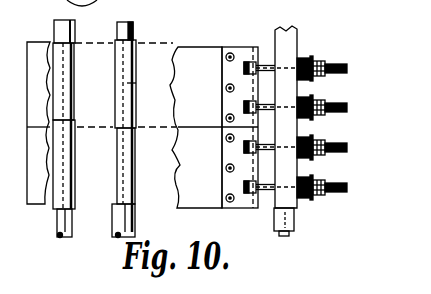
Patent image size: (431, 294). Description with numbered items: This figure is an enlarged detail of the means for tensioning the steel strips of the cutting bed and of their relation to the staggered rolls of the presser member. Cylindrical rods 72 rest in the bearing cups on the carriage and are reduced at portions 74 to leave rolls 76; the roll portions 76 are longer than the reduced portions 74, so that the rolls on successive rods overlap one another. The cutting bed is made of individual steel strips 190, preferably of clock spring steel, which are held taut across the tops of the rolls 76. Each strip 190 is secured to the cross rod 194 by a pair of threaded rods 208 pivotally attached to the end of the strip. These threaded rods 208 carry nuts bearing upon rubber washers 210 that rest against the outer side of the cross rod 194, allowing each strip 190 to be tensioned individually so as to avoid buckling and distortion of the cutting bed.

The cylindrical rod 72 is at (133, 33).
The reduced portion 74 is at (127, 164).
The roll 76 is at (136, 83).
The steel strip 190 is at (191, 52).
The cross rod 194 is at (287, 42).
The threaded rod 208 is at (338, 69).
The rubber washer 210 is at (306, 96).